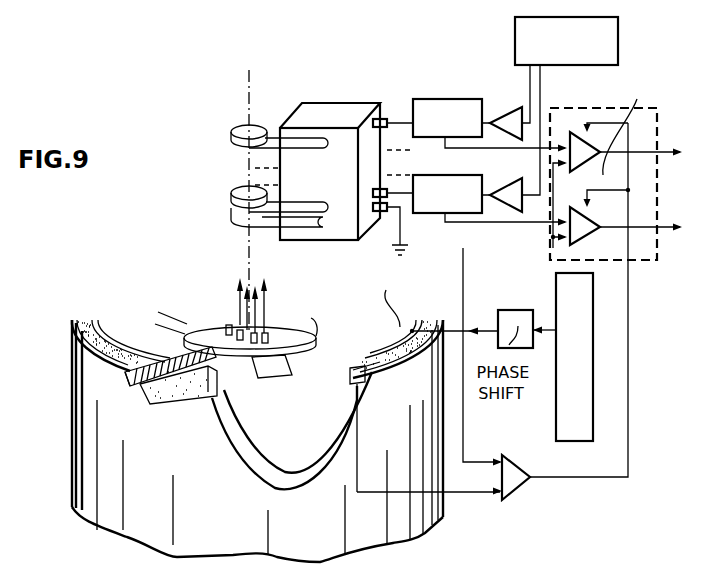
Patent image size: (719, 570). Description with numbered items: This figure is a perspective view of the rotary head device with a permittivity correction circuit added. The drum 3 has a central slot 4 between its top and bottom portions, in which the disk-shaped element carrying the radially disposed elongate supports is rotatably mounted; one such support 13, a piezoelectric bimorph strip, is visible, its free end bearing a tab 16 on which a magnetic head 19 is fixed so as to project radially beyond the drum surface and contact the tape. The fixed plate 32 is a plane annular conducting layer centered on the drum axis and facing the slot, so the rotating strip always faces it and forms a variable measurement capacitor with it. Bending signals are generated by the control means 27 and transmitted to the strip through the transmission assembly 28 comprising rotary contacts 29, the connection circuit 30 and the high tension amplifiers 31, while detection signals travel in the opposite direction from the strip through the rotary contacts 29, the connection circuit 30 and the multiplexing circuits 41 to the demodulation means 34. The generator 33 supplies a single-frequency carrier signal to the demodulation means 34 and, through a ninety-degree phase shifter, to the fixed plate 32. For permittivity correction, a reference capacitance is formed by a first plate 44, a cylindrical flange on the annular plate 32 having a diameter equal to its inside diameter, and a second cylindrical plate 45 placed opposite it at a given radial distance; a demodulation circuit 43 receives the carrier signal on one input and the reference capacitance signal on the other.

The drum 3 is at (235, 423).
The central slot 4 is at (69, 326).
The elongate support 13 is at (177, 393).
The tab 16 is at (128, 380).
The magnetic head 19 is at (142, 392).
The control means 27 is at (618, 40).
The transmission assembly 28 is at (251, 146).
The rotary contacts 29 is at (232, 138).
The connection circuit 30 is at (335, 113).
The high tension amplifiers 31 is at (505, 159).
The fixed plate 32 is at (418, 362).
The generator 33 is at (593, 400).
The demodulation means 34 is at (658, 121).
The multiplexing circuits 41 is at (437, 99).
The demodulation circuit 43 is at (520, 483).
The first plate 44 is at (374, 388).
The second cylindrical plate 45 is at (352, 372).